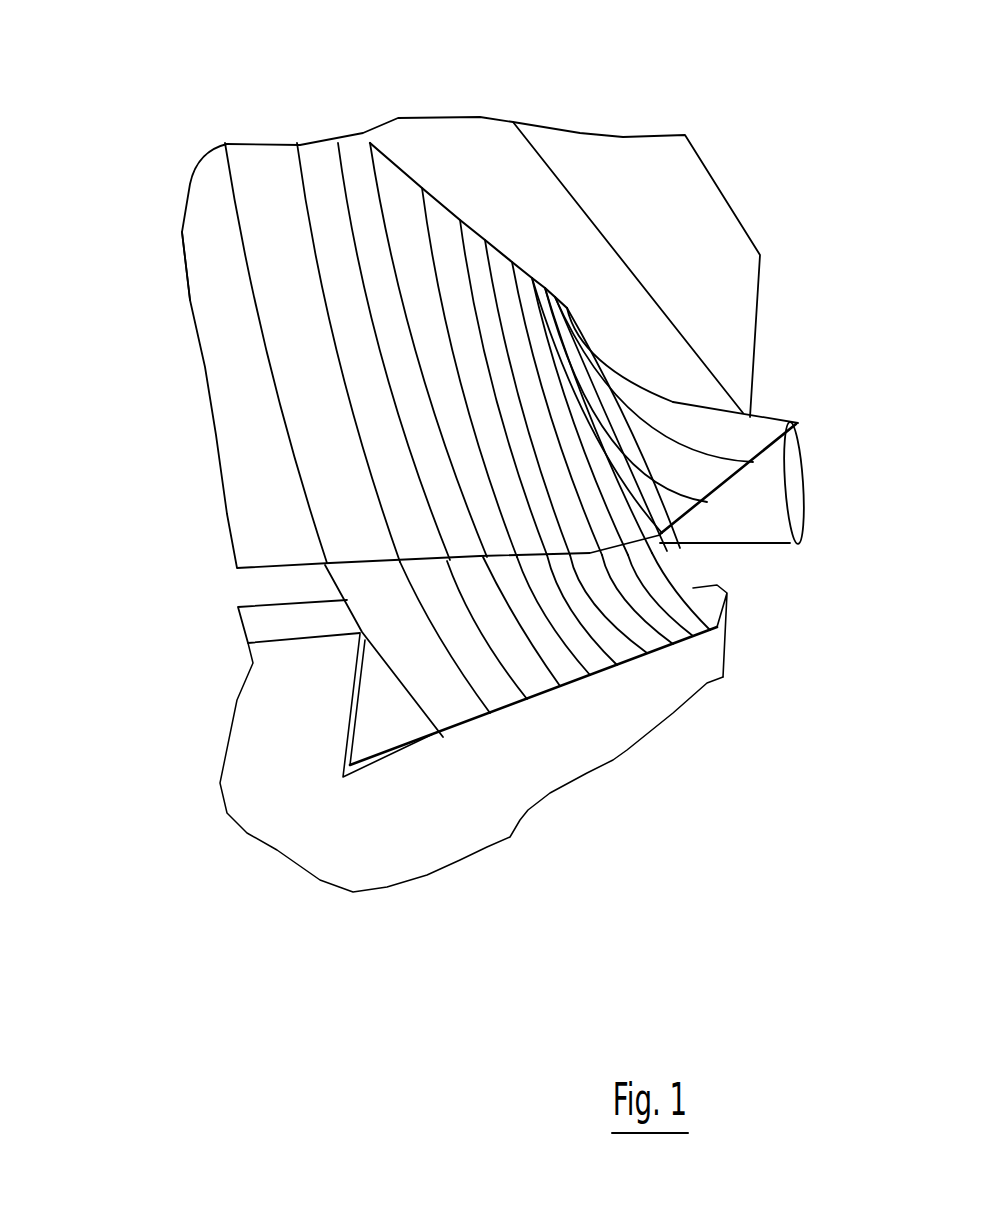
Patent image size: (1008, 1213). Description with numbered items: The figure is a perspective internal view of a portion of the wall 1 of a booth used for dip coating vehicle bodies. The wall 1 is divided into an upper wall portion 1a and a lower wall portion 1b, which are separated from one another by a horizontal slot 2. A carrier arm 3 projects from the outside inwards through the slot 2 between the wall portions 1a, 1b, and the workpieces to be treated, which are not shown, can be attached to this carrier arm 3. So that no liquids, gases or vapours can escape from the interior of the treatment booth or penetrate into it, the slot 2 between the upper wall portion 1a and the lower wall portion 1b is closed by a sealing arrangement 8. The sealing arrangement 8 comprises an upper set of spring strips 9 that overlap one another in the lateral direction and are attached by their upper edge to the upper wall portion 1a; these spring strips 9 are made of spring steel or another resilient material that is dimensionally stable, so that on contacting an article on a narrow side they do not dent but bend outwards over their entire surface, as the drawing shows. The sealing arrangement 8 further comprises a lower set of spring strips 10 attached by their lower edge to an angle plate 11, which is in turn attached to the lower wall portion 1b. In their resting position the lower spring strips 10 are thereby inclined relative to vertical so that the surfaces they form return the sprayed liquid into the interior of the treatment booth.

The wall 1 is at (617, 196).
The upper wall portion 1a is at (680, 207).
The lower wall portion 1b is at (283, 778).
The horizontal slot 2 is at (670, 362).
The carrier arm 3 is at (757, 520).
The sealing arrangement 8 is at (203, 253).
The upper set of spring strips 9 is at (260, 192).
The lower set of spring strips 10 is at (418, 662).
The angle plate 11 is at (412, 752).